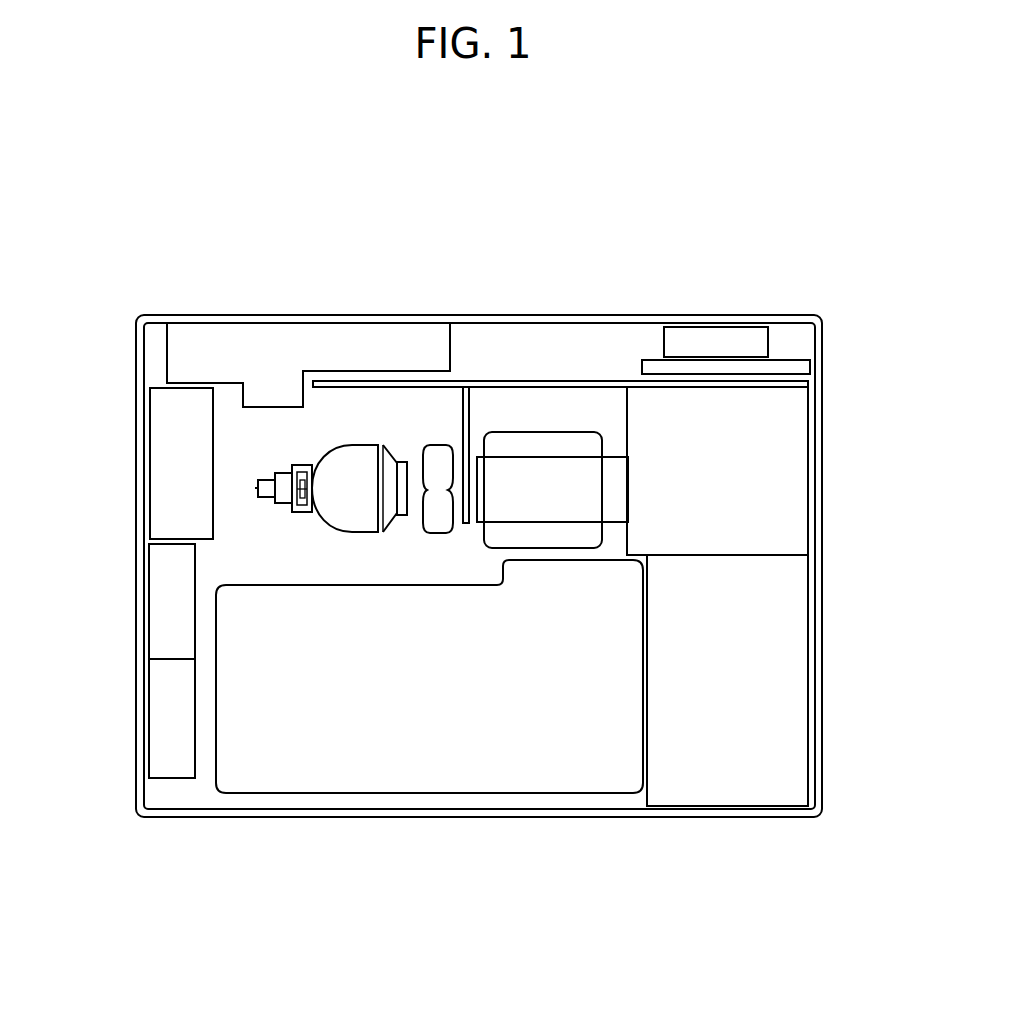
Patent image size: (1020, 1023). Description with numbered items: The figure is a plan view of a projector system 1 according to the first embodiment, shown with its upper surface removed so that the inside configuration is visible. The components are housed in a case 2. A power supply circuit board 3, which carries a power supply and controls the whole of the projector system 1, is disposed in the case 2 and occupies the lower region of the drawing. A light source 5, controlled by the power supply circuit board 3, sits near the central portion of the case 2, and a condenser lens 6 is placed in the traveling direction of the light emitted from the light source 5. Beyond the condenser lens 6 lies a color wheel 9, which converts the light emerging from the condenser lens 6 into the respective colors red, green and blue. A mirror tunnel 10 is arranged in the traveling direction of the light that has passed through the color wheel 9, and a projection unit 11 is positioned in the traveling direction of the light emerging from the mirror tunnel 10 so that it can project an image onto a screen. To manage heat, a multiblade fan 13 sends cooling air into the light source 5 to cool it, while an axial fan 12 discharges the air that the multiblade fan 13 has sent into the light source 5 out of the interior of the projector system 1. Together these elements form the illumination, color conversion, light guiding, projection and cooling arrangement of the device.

The projector system 1 is at (494, 222).
The case 2 is at (730, 316).
The power supply circuit board 3 is at (453, 793).
The light source 5 is at (347, 444).
The condenser lens 6 is at (434, 445).
The color wheel 9 is at (472, 428).
The mirror tunnel 10 is at (605, 456).
The projection unit 11 is at (833, 541).
The axial fan 12 is at (550, 432).
The multiblade fan 13 is at (150, 472).